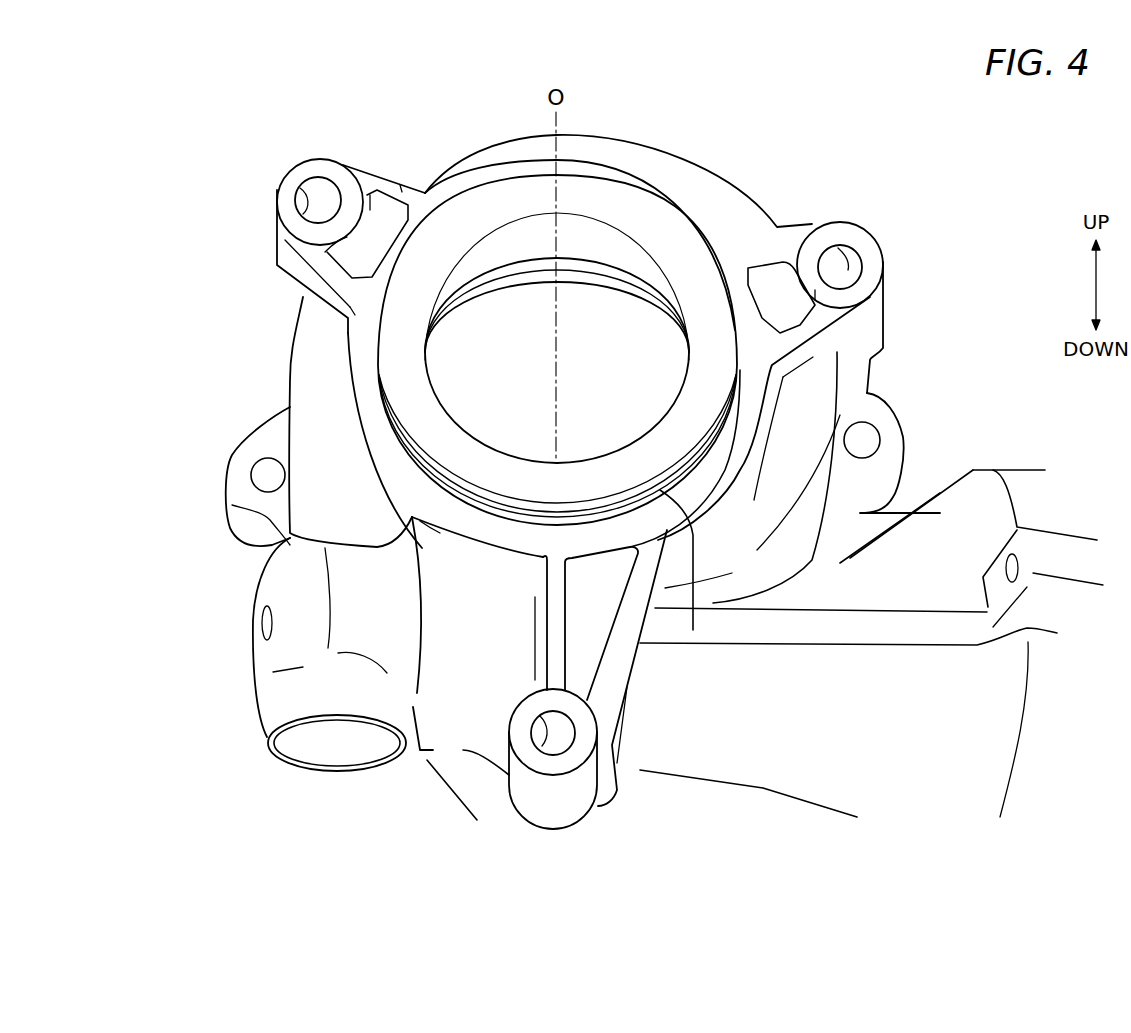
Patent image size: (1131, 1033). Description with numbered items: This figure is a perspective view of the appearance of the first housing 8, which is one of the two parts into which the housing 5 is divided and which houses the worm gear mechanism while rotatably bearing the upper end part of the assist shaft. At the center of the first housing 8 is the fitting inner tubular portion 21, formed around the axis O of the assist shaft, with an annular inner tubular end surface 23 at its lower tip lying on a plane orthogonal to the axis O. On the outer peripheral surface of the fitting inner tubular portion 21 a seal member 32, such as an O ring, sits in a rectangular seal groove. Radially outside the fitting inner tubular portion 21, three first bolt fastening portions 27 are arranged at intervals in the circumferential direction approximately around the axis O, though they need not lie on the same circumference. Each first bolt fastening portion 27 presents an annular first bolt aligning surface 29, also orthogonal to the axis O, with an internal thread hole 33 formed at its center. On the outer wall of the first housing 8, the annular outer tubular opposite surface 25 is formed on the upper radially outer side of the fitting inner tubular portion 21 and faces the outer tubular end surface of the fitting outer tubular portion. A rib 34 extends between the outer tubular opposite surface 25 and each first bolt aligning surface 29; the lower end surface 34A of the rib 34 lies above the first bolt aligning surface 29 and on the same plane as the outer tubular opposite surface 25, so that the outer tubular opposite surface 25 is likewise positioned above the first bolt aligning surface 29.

The housing 5 is at (637, 477).
The first housing 8 is at (581, 223).
The fitting inner tubular portion 21 is at (472, 350).
The inner tubular end surface 23 is at (612, 200).
The outer tubular opposite surface 25 is at (750, 398).
The first bolt fastening portion 27 is at (597, 495).
The first bolt aligning surface 29 is at (313, 172).
The seal member 32 is at (693, 630).
The internal thread hole 33 is at (305, 188).
The rib 34 is at (571, 449).
The lower end surface 34A is at (398, 188).